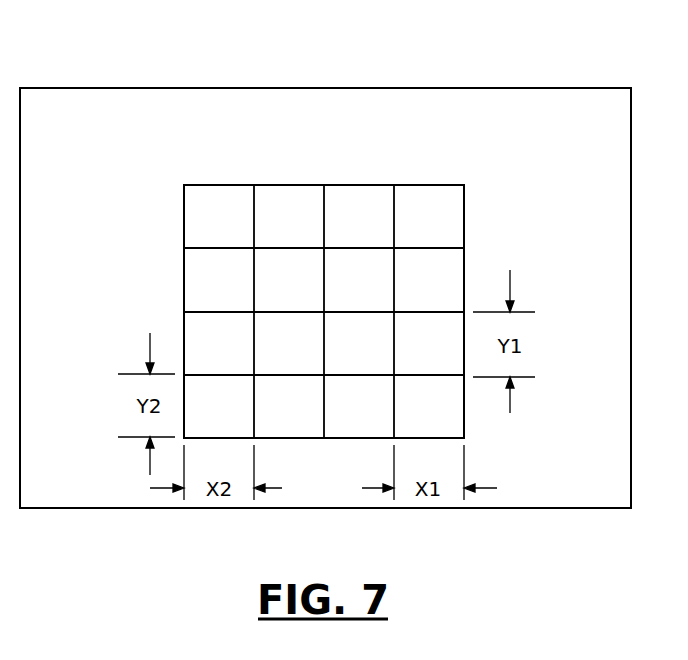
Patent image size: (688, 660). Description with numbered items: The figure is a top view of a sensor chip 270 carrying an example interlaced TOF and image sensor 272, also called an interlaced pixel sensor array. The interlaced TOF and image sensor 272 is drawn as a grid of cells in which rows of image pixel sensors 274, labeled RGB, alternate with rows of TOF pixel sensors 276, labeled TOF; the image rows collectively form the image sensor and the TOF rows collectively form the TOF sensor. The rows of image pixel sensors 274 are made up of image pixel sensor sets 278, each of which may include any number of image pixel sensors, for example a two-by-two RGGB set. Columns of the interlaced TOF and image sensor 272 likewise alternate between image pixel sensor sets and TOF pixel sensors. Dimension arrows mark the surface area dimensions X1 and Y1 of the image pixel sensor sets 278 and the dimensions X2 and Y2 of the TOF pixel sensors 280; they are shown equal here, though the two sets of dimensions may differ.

The sensor chip 270 is at (544, 88).
The interlaced TOF and image sensor 272 is at (464, 185).
The rows of image pixel sensors 274 is at (184, 343).
The rows of TOF pixel sensors 276 is at (184, 281).
The image pixel sensor sets 278 is at (360, 185).
The TOF pixel sensors 280 is at (358, 438).